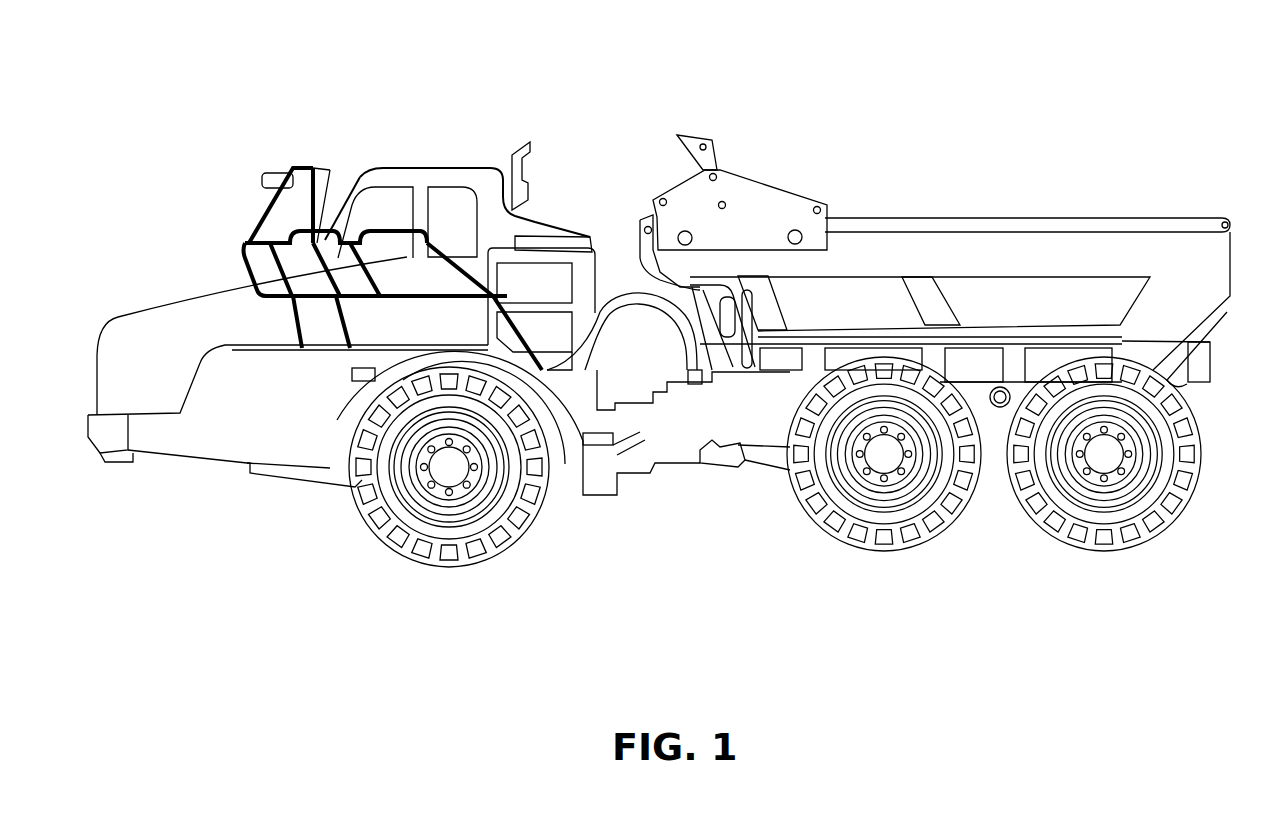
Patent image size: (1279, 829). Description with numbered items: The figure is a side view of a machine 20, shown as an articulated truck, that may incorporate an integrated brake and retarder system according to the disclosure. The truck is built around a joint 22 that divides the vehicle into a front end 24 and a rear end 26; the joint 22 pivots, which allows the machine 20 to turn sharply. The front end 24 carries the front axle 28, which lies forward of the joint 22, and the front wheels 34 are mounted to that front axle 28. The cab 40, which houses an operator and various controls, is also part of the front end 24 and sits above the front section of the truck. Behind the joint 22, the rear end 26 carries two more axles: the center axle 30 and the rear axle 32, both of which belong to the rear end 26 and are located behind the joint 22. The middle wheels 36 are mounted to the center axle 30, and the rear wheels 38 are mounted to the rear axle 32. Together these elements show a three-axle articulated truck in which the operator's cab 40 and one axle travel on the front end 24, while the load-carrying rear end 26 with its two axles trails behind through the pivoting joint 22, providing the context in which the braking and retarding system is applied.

The machine 20 is at (711, 89).
The joint 22 is at (610, 513).
The front end 24 is at (193, 322).
The rear end 26 is at (884, 263).
The front axle 28 is at (445, 468).
The center axle 30 is at (885, 456).
The rear axle 32 is at (1105, 456).
The front wheels 34 is at (475, 547).
The middle wheels 36 is at (830, 535).
The rear wheels 38 is at (1053, 537).
The cab 40 is at (444, 126).